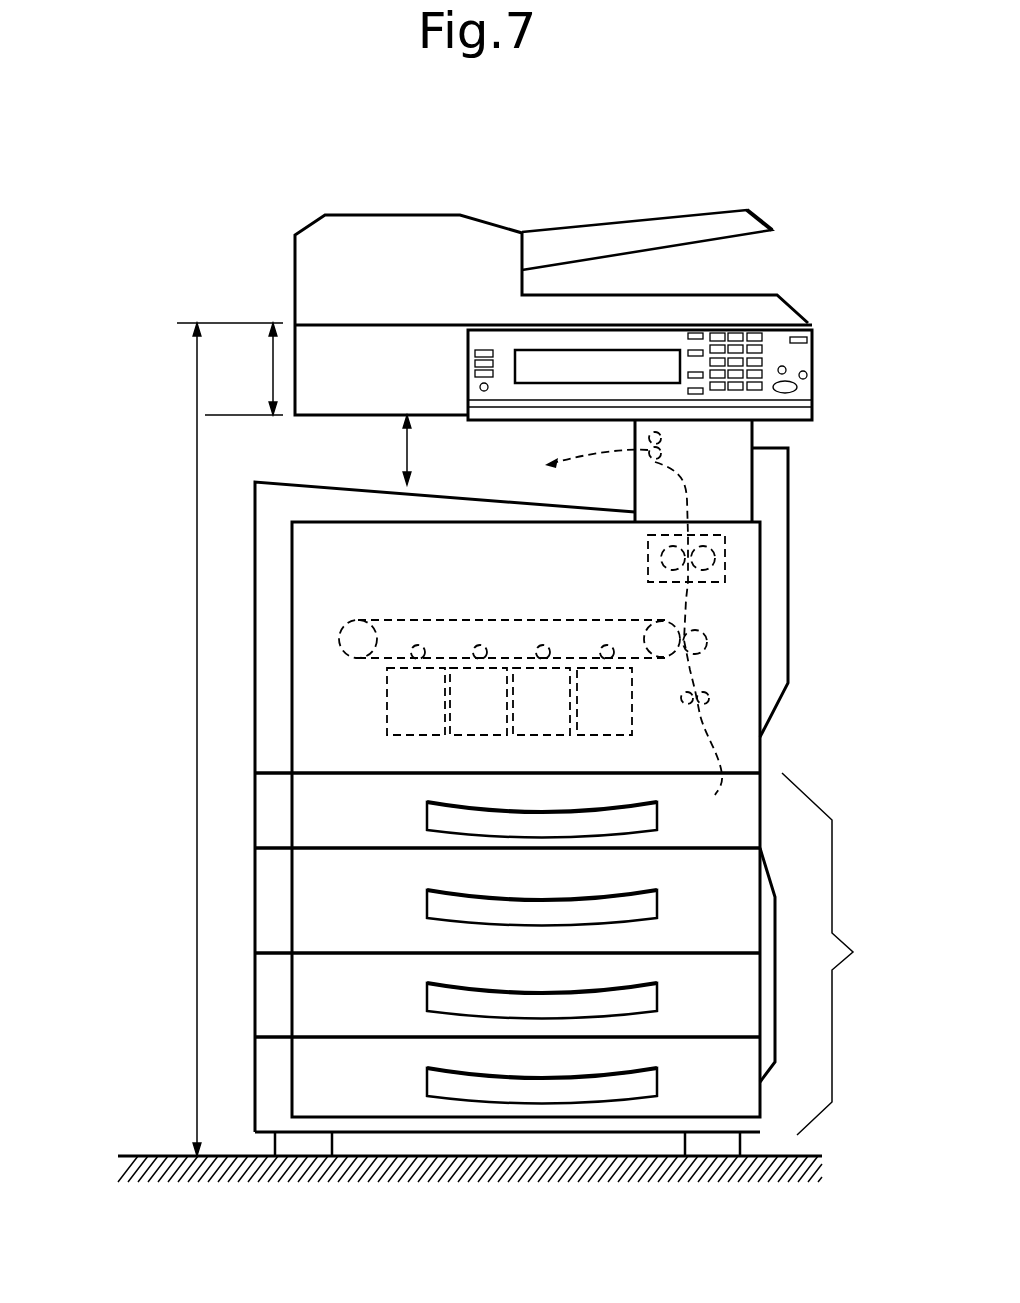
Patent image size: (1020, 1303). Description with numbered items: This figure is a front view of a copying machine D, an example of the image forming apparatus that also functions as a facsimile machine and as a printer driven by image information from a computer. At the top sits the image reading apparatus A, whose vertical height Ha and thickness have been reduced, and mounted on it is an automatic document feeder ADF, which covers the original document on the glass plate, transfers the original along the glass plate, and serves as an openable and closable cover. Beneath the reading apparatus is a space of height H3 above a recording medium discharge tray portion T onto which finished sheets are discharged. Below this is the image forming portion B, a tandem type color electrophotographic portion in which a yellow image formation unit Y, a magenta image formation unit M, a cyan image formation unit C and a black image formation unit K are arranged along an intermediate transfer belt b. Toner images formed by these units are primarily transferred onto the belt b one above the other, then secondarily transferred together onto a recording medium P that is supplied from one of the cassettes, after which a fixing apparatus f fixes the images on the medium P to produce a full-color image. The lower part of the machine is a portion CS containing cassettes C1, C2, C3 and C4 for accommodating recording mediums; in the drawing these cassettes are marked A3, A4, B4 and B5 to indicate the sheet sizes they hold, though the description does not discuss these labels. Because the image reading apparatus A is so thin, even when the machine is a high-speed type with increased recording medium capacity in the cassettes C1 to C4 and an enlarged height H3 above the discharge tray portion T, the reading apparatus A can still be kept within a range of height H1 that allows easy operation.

The automatic document feeder ADF is at (455, 297).
The image reading apparatus A is at (393, 391).
The recording medium discharge tray portion T is at (455, 493).
The image forming portion B is at (760, 652).
The intermediate transfer belt b is at (427, 618).
The yellow image formation unit Y is at (401, 724).
The magenta image formation unit M is at (464, 724).
The cyan image formation unit C is at (527, 724).
The black image formation unit K is at (590, 724).
The fixing apparatus f is at (646, 558).
The recording medium P is at (690, 612).
The cassette C1 is at (378, 830).
The cassette C2 is at (378, 923).
The cassette C3 is at (378, 1014).
The cassette C4 is at (378, 1098).
The A3 size paper A3 is at (727, 820).
The A4 size paper A4 is at (727, 905).
The B4 size paper B4 is at (727, 995).
The B5 size paper B5 is at (727, 1075).
The portion having cassettes CS is at (844, 954).
The height H1 is at (214, 739).
The vertical height Ha is at (244, 369).
The height H3 is at (370, 450).
The copying machine D is at (148, 579).